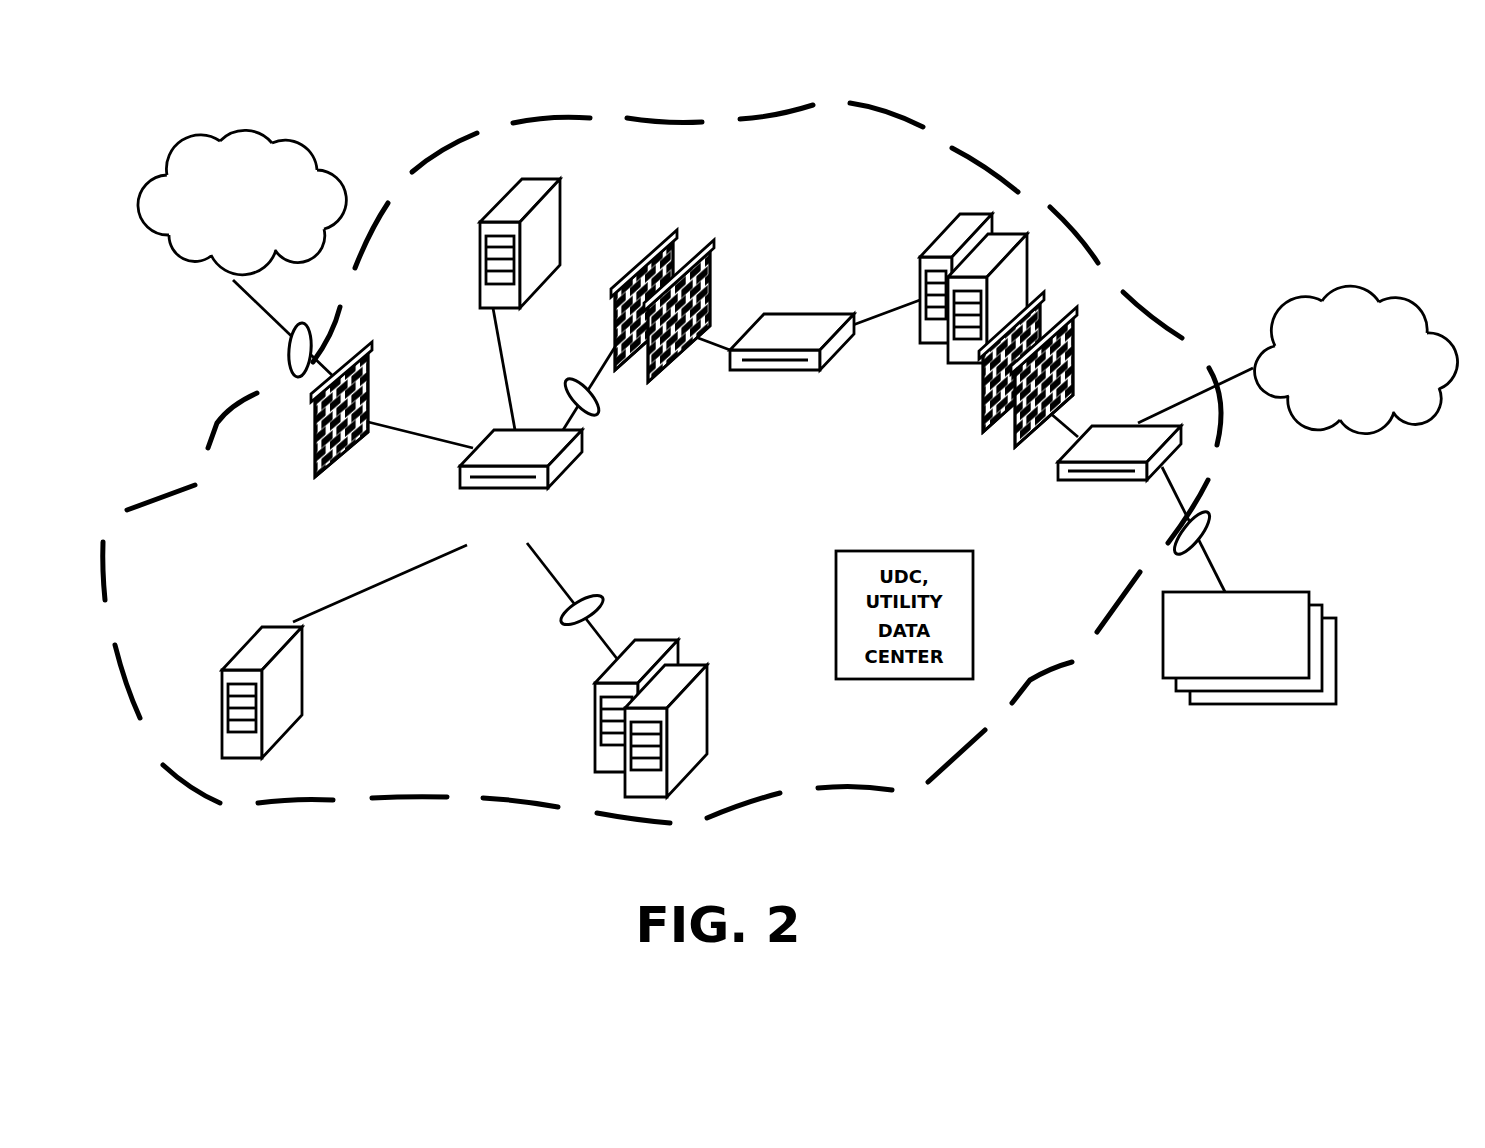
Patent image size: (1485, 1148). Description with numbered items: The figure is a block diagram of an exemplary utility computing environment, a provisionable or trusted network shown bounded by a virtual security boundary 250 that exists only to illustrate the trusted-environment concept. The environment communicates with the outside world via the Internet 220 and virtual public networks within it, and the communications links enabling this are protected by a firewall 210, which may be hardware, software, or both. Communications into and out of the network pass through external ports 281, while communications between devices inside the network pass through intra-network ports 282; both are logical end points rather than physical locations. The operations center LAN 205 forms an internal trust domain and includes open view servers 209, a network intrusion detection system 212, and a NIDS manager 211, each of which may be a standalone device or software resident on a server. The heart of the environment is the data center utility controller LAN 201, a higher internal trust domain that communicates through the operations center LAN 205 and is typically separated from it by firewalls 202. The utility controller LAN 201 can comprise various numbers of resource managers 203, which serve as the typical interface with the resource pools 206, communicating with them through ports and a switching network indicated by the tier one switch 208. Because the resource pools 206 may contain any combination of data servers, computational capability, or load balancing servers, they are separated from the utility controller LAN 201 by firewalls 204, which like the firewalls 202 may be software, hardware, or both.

The data center utility controller LAN 201 is at (789, 393).
The firewalls 202 is at (804, 280).
The resource managers 203 is at (1077, 252).
The firewalls 204 is at (1187, 337).
The operations center LAN 205 is at (487, 511).
The resource pools 206 is at (1337, 346).
The tier 1 switch 208 is at (1078, 505).
The open view servers 209 is at (694, 225).
The firewall 210 is at (242, 518).
The NIDS manager 211 is at (316, 765).
The network intrusion detection system (NIDS) 212 is at (748, 776).
The Internet 220 is at (227, 206).
The security boundary 250 is at (890, 848).
The external ports 281 is at (287, 357).
The intra-network ports 282 is at (726, 506).